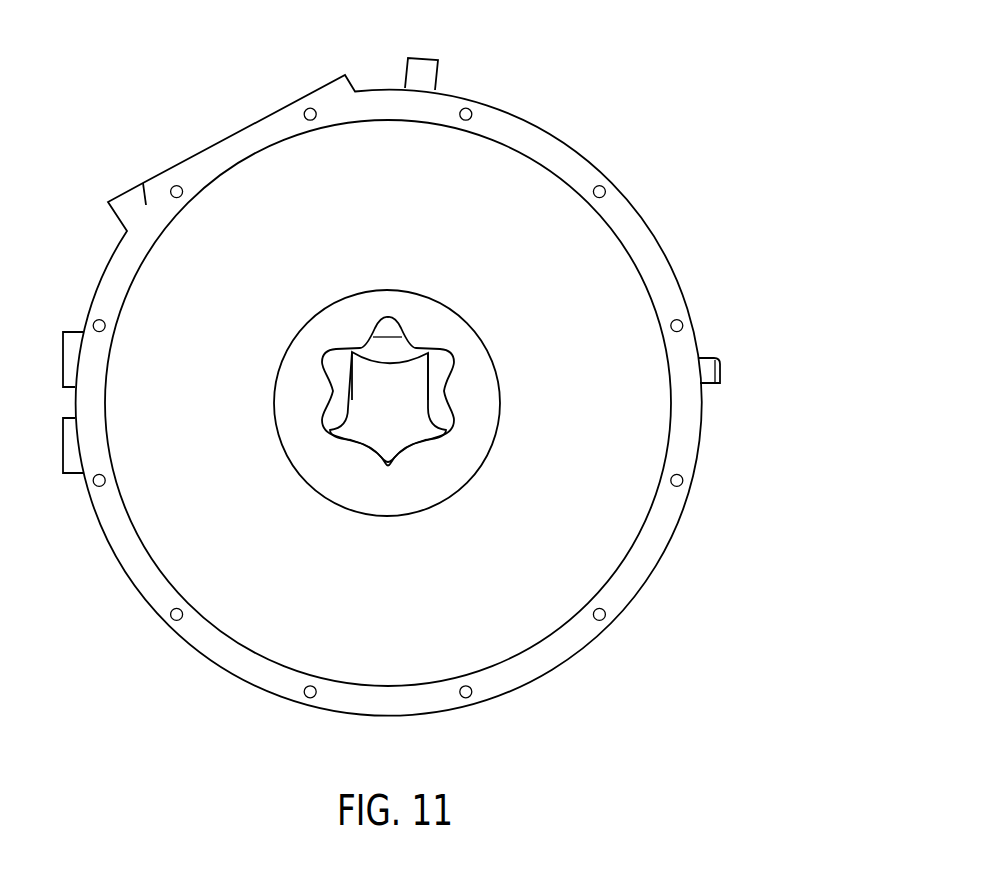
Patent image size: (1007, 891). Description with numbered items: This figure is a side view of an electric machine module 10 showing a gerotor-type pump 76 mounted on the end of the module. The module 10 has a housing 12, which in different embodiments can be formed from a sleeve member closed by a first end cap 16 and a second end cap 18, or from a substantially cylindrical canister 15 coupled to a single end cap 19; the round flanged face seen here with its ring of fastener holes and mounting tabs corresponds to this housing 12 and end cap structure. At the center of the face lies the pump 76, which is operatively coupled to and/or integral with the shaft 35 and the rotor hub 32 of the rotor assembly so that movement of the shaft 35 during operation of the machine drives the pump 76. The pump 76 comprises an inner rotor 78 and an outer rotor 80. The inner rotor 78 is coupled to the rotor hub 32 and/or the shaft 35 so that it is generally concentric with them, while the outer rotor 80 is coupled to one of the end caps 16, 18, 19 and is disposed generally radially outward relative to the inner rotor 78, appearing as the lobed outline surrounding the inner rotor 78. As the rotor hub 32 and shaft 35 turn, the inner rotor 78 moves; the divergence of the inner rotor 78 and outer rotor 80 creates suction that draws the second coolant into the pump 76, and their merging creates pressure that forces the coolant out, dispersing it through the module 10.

The electric machine module 10 is at (543, 65).
The housing 12 is at (108, 261).
The cylindrical canister 15 is at (424, 380).
The first end cap 16 is at (424, 380).
The second end cap 18 is at (424, 380).
The single end cap 19 is at (530, 183).
The rotor hub 32 is at (552, 391).
The shaft 35 is at (437, 380).
The gerotor-type pump 76 is at (301, 421).
The inner rotor 78 is at (390, 445).
The outer rotor 80 is at (420, 447).